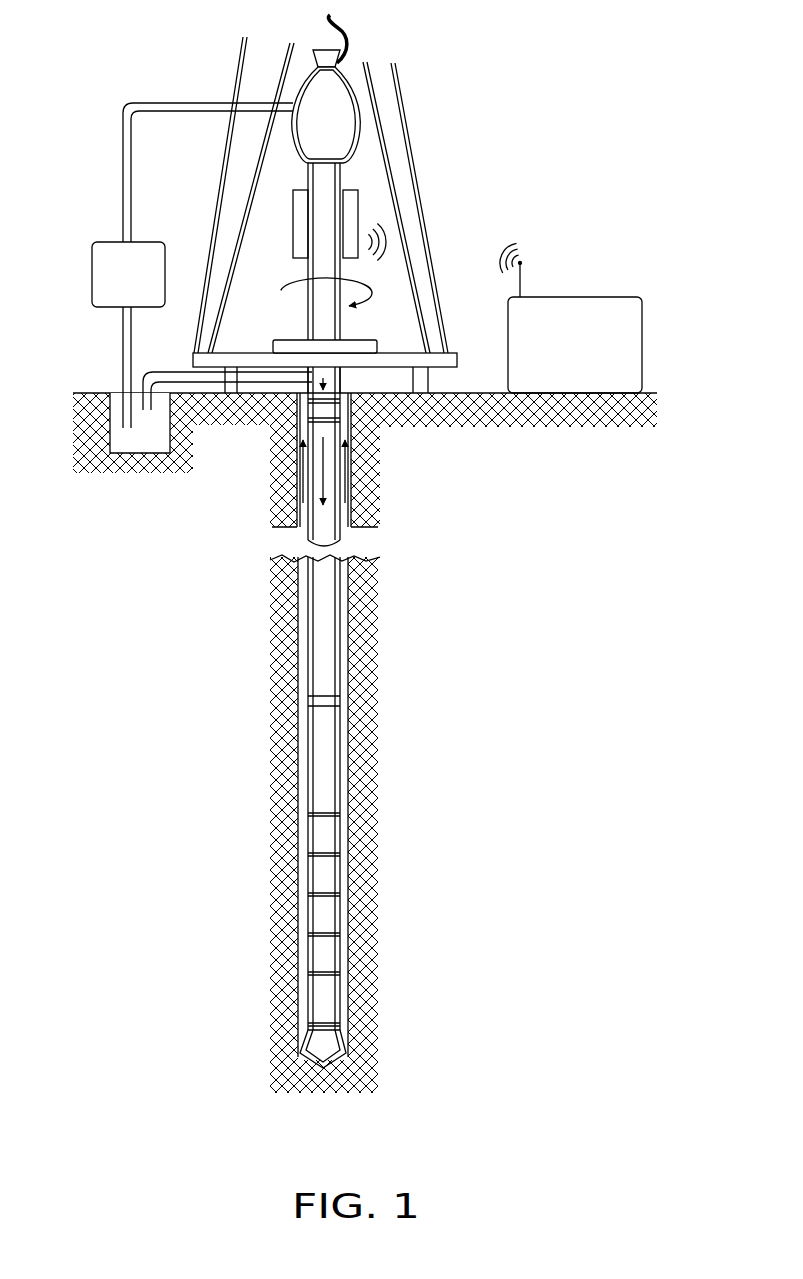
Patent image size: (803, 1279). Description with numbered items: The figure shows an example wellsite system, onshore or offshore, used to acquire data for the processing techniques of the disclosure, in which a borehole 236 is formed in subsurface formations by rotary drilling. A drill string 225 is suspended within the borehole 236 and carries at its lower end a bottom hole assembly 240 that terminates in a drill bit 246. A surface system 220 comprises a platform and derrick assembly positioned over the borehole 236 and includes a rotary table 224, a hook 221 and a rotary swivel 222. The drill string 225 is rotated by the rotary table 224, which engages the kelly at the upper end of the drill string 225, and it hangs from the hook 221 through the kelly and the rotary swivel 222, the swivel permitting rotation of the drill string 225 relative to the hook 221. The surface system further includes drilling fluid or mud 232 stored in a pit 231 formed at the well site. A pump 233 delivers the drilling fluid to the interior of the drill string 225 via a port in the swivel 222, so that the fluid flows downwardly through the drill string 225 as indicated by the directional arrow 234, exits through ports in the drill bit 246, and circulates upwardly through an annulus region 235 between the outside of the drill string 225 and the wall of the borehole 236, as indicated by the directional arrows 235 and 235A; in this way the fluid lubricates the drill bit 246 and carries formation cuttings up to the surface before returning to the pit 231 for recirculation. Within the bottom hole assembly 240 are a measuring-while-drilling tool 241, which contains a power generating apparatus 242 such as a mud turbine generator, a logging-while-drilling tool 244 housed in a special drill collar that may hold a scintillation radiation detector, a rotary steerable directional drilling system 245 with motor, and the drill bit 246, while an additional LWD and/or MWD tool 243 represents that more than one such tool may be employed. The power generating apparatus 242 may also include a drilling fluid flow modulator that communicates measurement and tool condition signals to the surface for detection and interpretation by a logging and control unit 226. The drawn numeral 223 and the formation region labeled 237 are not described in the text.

The surface system 220 is at (437, 100).
The hook 221 is at (323, 20).
The rotary swivel 222 is at (323, 140).
The kelly / drill pipe 223 is at (318, 327).
The rotary table 224 is at (350, 343).
The drill string 225 is at (293, 340).
The logging and control unit 226 is at (573, 296).
The pit 231 is at (142, 455).
The drilling fluid or mud 232 is at (117, 395).
The pump 233 is at (108, 307).
The directional arrow 234 is at (300, 461).
The annulus region 235 is at (296, 464).
The directional arrow 235A is at (352, 477).
The borehole 236 is at (348, 400).
The formation / borehole 237 is at (382, 598).
The bottom hole assembly 240 is at (319, 815).
The measuring-while-drilling tool 241 is at (325, 833).
The power generating apparatus 242 is at (325, 872).
The additional LWD and/or MWD tool 243 is at (325, 917).
The logging-while-drilling tool 244 is at (325, 952).
The rotary steerable directional drilling system 245 is at (325, 993).
The drill bit 246 is at (325, 1040).